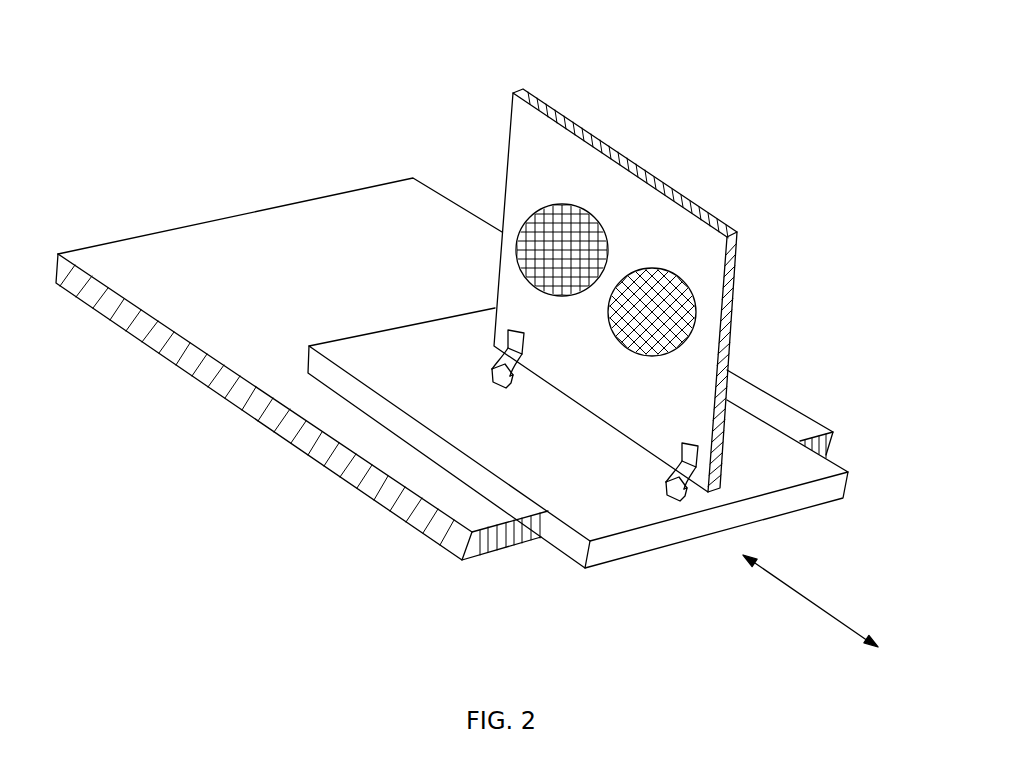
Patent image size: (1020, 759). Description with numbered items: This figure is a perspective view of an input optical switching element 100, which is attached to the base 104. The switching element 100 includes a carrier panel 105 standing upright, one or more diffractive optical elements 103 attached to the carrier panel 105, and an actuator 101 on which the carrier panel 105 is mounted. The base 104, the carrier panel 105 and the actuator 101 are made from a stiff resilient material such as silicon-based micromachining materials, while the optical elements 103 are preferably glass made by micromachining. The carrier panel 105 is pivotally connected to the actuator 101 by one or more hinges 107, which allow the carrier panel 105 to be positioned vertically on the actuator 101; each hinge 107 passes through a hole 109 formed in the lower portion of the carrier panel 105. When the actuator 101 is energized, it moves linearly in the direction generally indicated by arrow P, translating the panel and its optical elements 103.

The input optical switching element 100 is at (266, 185).
The actuator 101 is at (810, 468).
The diffractive optical elements 103 is at (533, 217).
The base 104 is at (160, 248).
The carrier panel 105 is at (567, 137).
The hinges 107 is at (522, 357).
The hole 109 is at (523, 333).
The arrow P is at (805, 600).